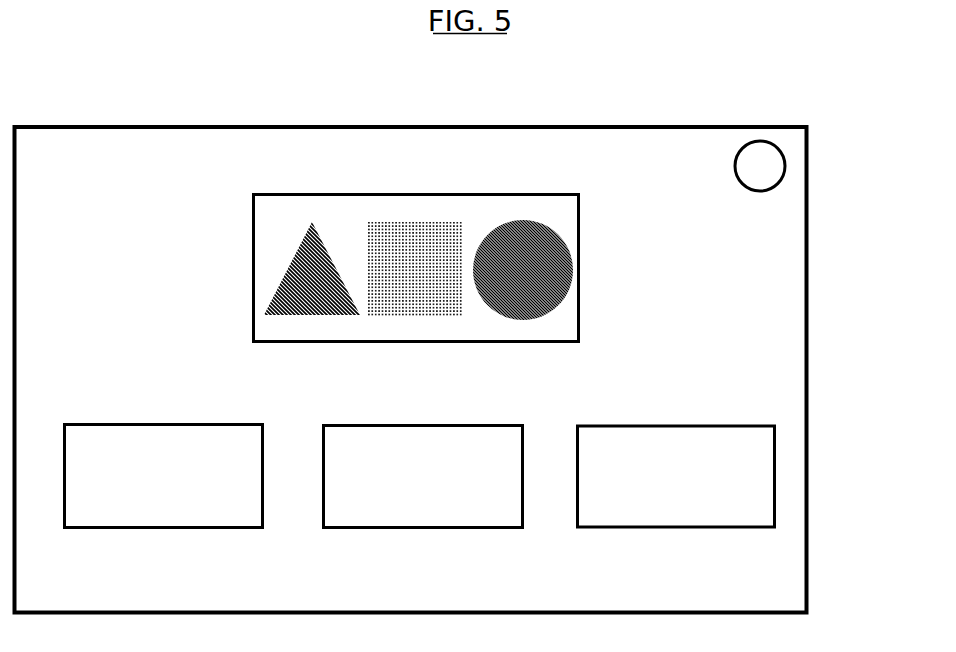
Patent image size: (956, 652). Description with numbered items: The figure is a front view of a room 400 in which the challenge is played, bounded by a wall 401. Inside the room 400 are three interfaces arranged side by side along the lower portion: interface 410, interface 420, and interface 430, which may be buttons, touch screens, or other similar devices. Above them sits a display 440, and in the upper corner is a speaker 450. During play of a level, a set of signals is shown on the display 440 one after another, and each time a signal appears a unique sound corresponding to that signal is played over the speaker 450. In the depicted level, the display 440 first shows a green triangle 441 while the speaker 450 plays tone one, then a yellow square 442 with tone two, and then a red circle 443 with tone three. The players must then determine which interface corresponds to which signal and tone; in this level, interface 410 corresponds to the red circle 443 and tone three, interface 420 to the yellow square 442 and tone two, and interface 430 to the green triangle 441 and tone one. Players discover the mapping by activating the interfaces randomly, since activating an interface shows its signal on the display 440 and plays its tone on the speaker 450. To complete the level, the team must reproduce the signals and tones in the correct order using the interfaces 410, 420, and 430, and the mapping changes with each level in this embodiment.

The room 400 is at (411, 346).
The Wall 401 is at (655, 109).
The interface 410 is at (238, 433).
The interface 420 is at (505, 432).
The interface 430 is at (707, 442).
The display 440 is at (346, 190).
The green triangle 441 is at (312, 222).
The yellow square 442 is at (414, 222).
The red circle 443 is at (519, 223).
The speaker 450 is at (775, 171).